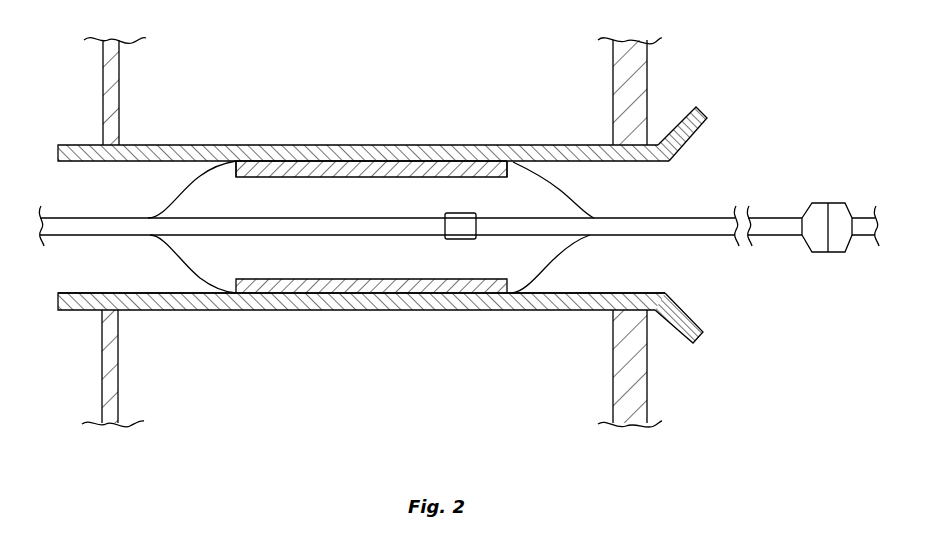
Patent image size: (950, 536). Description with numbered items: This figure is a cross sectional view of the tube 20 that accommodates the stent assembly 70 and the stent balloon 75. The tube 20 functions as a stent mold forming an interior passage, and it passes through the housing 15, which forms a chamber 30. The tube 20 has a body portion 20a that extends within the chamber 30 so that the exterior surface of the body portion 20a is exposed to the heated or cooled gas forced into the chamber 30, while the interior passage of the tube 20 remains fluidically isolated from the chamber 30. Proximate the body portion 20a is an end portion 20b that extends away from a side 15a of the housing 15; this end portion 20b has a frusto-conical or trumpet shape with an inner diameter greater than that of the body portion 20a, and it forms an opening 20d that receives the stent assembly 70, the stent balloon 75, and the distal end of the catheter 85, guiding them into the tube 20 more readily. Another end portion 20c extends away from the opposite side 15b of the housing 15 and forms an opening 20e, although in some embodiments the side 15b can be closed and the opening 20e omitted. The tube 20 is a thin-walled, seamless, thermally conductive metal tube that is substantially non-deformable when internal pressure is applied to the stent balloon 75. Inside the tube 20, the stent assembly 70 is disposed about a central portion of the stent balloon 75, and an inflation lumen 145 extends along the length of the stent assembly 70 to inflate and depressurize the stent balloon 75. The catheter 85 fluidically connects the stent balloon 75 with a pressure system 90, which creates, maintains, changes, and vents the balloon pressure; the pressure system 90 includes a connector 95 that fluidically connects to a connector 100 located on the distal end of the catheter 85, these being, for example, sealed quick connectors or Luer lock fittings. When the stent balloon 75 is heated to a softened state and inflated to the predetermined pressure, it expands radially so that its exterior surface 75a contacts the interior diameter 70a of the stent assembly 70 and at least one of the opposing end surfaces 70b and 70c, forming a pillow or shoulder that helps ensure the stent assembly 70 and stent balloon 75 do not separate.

The housing 15 is at (370, 90).
The side of housing 15a is at (613, 75).
The side of housing 15b is at (103, 72).
The tube 20 is at (377, 352).
The body portion 20a is at (380, 145).
The end portion 20b is at (662, 130).
The end portion 20c is at (67, 314).
The opening 20d is at (678, 303).
The opening 20e is at (78, 293).
The chamber 30 is at (347, 414).
The stent assembly 70 is at (334, 191).
The interior diameter 70a is at (438, 160).
The end surface 70b is at (222, 160).
The end surface 70c is at (516, 160).
The stent balloon 75 is at (545, 172).
The exterior surface 75a is at (578, 200).
The catheter 85 is at (786, 216).
The pressure system 90 is at (825, 302).
The connector 95 is at (840, 253).
The connector 100 is at (821, 253).
The inflation lumen 145 is at (267, 218).